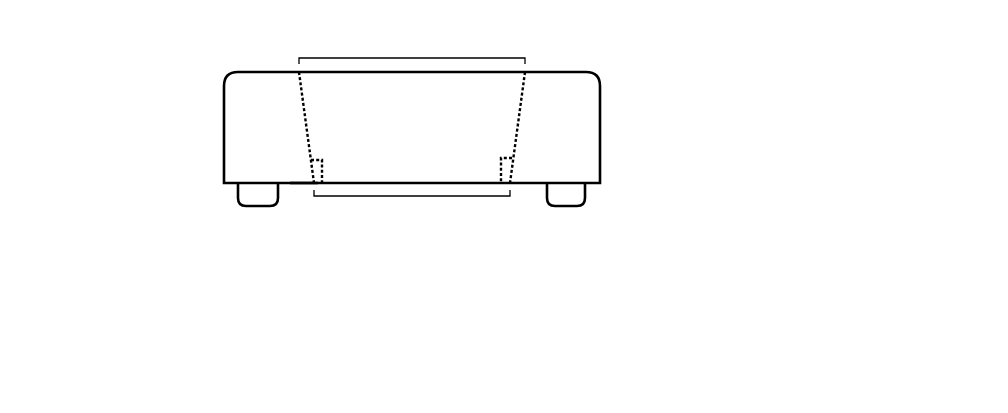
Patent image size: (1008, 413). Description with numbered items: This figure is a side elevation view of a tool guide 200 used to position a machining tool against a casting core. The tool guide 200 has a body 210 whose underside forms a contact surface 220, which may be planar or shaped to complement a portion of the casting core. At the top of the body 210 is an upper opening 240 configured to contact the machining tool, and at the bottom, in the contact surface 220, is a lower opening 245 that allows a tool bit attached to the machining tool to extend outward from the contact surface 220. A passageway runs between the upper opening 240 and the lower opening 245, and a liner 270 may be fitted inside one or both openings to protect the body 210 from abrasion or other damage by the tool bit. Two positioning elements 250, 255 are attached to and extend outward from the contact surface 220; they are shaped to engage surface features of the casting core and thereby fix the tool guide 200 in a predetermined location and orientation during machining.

The tool guide 200 is at (724, 63).
The body 210 is at (224, 128).
The contact surface 220 is at (304, 192).
The upper opening 240 is at (413, 58).
The lower opening 245 is at (413, 198).
The positioning element 250 is at (238, 193).
The positioning element 255 is at (590, 192).
The liner 270 is at (321, 160).